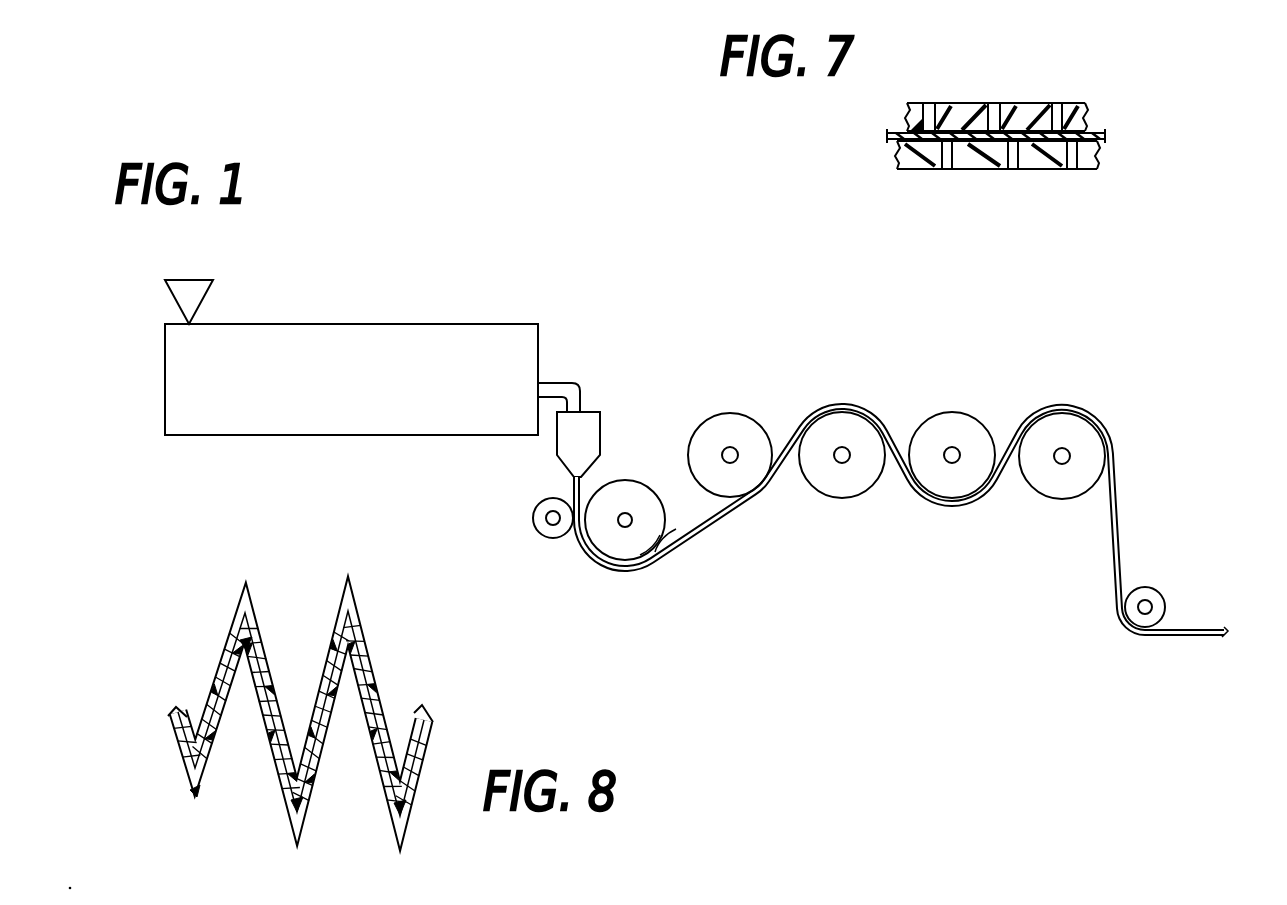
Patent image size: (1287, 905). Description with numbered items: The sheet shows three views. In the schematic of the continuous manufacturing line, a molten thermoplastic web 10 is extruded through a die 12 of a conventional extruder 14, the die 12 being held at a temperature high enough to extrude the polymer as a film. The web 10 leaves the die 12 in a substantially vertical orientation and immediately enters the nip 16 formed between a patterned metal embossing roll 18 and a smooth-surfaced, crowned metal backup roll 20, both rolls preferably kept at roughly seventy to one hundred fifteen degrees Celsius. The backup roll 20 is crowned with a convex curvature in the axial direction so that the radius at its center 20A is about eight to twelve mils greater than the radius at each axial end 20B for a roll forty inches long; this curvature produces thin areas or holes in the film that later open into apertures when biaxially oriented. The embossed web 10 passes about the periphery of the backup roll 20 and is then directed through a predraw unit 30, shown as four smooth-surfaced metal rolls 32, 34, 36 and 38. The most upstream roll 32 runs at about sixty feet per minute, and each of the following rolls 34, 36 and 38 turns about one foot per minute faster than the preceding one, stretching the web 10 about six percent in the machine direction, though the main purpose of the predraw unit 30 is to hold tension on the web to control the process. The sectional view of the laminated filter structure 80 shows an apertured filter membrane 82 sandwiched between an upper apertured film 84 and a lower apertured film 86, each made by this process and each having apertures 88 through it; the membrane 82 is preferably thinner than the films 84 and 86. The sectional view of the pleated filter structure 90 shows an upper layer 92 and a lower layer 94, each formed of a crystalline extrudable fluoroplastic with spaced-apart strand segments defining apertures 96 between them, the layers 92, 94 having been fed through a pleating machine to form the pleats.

In FIG. 1, the thermoplastic web 10 is at (744, 523).
In FIG. 1, the die 12 is at (596, 414).
In FIG. 1, the extruder 14 is at (420, 324).
In FIG. 1, the nip 16 is at (569, 556).
In FIG. 1, the embossing roll 18 is at (528, 514).
In FIG. 1, the backup roll 20 is at (637, 466).
In FIG. 1, the center of the backup roll 20A is at (684, 558).
In FIG. 1, the axial end of the backup roll 20B is at (652, 548).
In FIG. 1, the predraw unit 30 is at (926, 464).
In FIG. 1, the most upstream roll 32 is at (745, 414).
In FIG. 1, the roll 34 is at (858, 497).
In FIG. 1, the roll 36 is at (975, 412).
In FIG. 1, the roll 38 is at (1052, 498).
In FIG. 7, the laminated filter structure 80 is at (1028, 138).
In FIG. 7, the apertured filter membrane 82 is at (894, 131).
In FIG. 7, the upper apertured film 84 is at (1040, 103).
In FIG. 7, the lower apertured film 86 is at (1040, 169).
In FIG. 7, the apertures 88 is at (995, 103).
In FIG. 8, the pleated filter structure 90 is at (270, 694).
In FIG. 8, the upper layer 92 is at (232, 636).
In FIG. 8, the lower layer 94 is at (318, 780).
In FIG. 8, the apertures 96 is at (386, 697).